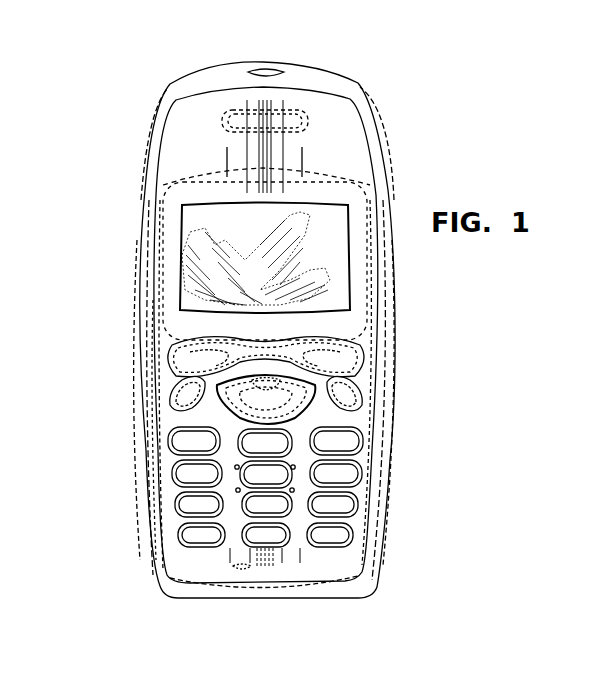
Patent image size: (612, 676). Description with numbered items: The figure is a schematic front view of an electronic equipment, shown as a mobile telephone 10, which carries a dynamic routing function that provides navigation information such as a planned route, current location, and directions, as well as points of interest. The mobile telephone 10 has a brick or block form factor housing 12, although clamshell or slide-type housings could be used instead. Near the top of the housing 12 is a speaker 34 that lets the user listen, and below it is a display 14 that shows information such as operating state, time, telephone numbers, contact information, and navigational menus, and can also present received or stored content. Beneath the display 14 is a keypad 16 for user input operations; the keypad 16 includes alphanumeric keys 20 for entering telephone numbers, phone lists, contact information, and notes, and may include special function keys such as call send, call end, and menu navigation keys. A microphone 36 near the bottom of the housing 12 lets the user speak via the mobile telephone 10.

The mobile telephone 10 is at (110, 72).
The housing 12 is at (150, 150).
The display 14 is at (183, 229).
The keypad 16 is at (160, 493).
The alphanumeric keys 20 is at (188, 437).
The speaker 34 is at (244, 125).
The microphone 36 is at (250, 573).